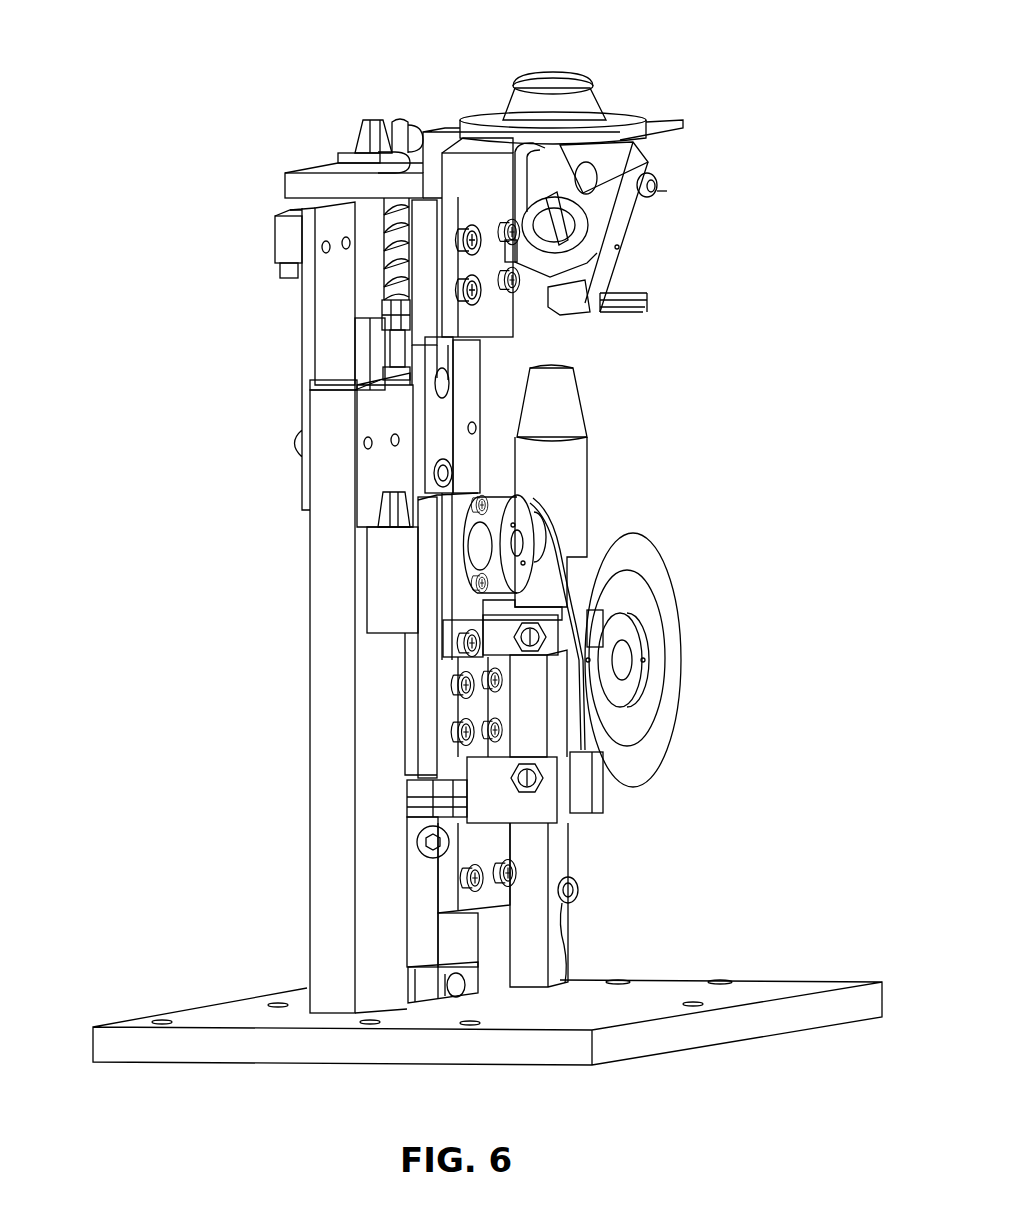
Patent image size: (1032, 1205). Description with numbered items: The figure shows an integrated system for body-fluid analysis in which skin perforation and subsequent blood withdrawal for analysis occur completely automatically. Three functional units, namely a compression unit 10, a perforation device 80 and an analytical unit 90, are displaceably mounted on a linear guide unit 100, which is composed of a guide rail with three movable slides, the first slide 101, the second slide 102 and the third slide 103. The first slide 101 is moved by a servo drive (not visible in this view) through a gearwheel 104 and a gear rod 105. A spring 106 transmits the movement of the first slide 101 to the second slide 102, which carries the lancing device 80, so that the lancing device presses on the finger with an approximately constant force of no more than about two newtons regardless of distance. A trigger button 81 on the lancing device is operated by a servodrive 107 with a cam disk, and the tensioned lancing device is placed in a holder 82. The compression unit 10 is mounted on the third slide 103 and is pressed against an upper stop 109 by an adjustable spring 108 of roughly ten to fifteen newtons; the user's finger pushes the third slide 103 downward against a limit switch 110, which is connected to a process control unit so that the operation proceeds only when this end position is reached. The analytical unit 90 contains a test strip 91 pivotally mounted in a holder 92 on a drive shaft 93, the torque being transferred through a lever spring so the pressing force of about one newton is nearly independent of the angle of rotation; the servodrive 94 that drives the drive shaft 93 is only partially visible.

The compression unit 10 is at (625, 72).
The perforation device 80 is at (568, 467).
The trigger button 81 is at (540, 535).
The holder 82 is at (503, 647).
The analytical unit 90 is at (697, 259).
The test strip 91 is at (558, 212).
The holder 92 is at (648, 164).
The drive shaft 93 is at (667, 192).
The servodrive 94 is at (533, 172).
The linear guide unit 100 is at (410, 481).
The first slide 101 is at (418, 900).
The second slide 102 is at (425, 683).
The third slide 103 is at (430, 331).
The gearwheel 104 is at (647, 745).
The gear rod 105 is at (560, 947).
The spring 106 is at (403, 798).
The servodrive 107 is at (460, 550).
The adjustable spring 108 is at (390, 278).
The upper stop 109 is at (355, 170).
The limit switch 110 is at (292, 222).